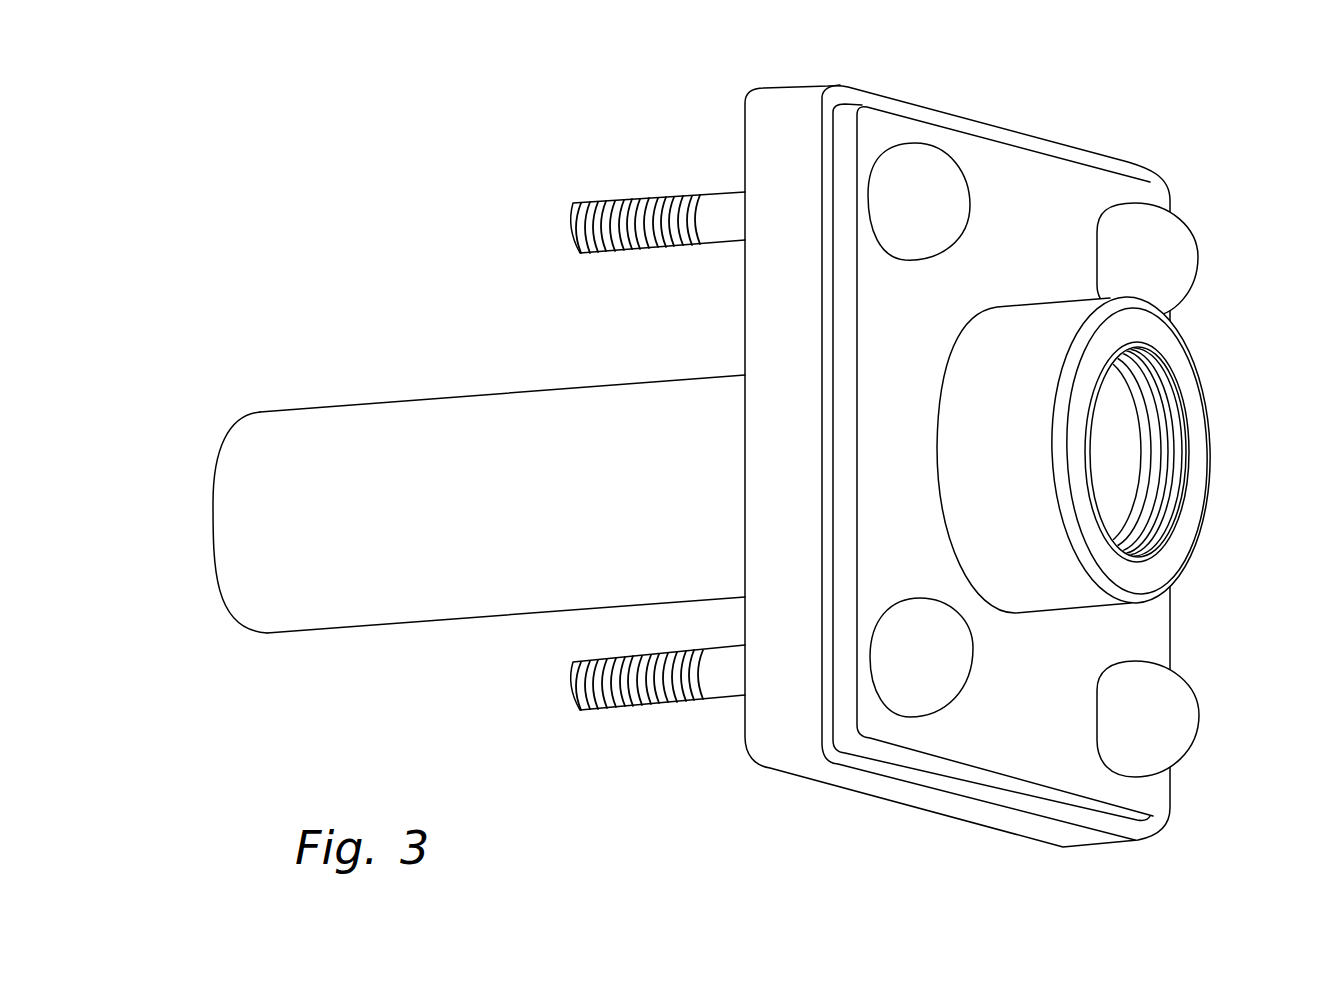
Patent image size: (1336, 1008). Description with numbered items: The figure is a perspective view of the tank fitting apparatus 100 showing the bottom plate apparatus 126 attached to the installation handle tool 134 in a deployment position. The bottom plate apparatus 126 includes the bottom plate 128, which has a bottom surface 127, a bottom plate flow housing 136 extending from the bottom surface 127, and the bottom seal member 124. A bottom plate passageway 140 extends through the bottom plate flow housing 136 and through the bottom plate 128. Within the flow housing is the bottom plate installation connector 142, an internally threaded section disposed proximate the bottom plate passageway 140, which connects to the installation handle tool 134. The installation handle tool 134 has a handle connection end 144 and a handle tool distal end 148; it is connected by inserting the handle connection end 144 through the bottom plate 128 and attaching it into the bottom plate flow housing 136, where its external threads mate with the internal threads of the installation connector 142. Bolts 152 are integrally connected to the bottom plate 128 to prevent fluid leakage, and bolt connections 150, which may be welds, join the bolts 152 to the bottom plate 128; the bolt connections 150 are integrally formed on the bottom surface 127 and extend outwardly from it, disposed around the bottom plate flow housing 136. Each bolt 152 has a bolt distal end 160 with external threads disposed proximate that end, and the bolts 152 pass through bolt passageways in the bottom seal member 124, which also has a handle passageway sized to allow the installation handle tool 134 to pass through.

The tank fitting apparatus 100 is at (182, 151).
The bottom seal member 124 is at (800, 82).
The bottom plate apparatus 126 is at (1224, 121).
The bottom surface 127 is at (1006, 170).
The bottom plate 128 is at (1080, 163).
The installation handle tool 134 is at (380, 403).
The bottom plate flow housing 136 is at (1053, 614).
The bottom plate passageway 140 is at (1117, 457).
The bottom plate installation connector 142 is at (1165, 487).
The handle connection end 144 is at (1124, 413).
The handle tool distal end 148 is at (212, 500).
The bolt connections 150 is at (1200, 257).
The bolts 152 is at (728, 690).
The bolt distal end 160 is at (570, 680).